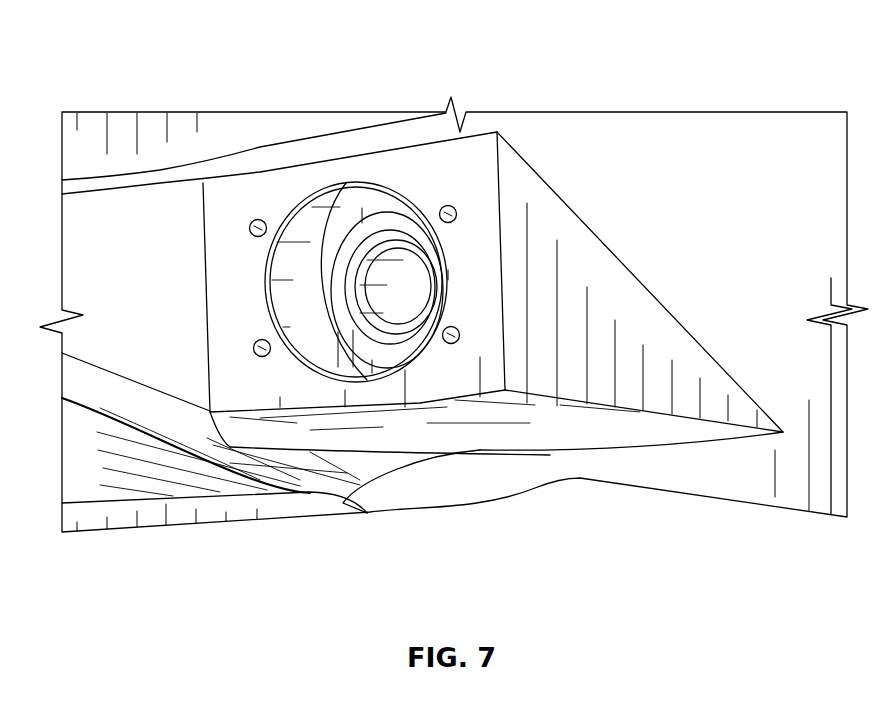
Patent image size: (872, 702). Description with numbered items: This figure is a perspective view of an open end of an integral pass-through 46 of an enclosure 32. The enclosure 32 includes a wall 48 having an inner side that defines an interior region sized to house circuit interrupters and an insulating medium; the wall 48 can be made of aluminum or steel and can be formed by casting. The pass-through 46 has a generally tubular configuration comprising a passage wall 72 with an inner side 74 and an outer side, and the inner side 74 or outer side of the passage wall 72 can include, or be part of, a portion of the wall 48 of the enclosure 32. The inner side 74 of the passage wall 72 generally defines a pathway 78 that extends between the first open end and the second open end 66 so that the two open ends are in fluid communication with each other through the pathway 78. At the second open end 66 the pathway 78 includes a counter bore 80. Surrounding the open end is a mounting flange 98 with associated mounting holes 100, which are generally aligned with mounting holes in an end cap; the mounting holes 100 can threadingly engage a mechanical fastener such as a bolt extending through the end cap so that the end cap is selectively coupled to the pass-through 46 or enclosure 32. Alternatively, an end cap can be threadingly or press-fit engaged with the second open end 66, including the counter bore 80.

The enclosure 32 is at (238, 133).
The pass-through 46 is at (408, 295).
The wall 48 is at (678, 190).
The second open end 66 is at (317, 177).
The passage wall 72 is at (403, 162).
The inner side 74 is at (368, 282).
The pathway 78 is at (368, 282).
The counter bore 80 is at (302, 353).
The mounting flange 98 is at (349, 254).
The mounting holes 100 is at (256, 226).